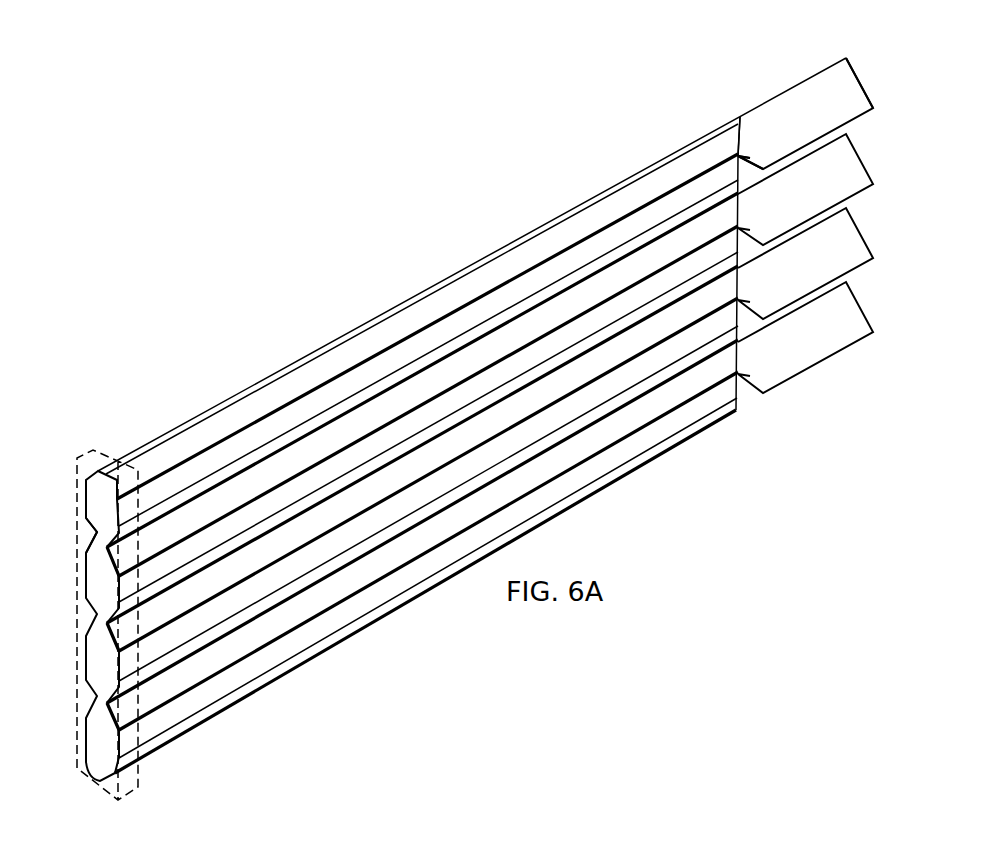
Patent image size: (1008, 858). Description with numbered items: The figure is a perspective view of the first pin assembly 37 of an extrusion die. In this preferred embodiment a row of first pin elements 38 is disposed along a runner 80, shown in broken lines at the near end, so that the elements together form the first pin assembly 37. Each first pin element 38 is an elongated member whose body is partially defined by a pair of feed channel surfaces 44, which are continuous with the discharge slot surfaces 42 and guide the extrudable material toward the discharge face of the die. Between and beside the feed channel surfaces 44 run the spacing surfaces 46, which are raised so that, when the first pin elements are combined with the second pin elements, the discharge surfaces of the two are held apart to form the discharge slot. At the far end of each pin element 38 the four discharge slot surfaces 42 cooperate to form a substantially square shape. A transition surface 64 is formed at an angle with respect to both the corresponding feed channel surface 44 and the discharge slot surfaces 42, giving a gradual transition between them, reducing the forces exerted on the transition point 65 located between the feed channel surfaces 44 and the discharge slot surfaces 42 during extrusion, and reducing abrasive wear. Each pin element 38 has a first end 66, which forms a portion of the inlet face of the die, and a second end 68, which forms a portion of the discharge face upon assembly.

The first pin assembly 37 is at (320, 322).
The first pin element 38 is at (436, 283).
The discharge slot surface 42 is at (800, 105).
The feed channel surface 44 is at (238, 447).
The spacing surface 46 is at (178, 452).
The transition surface 64 is at (757, 170).
The transition point 65 is at (748, 148).
The first end 66 is at (96, 530).
The second end 68 is at (857, 77).
The runner 80 is at (77, 768).